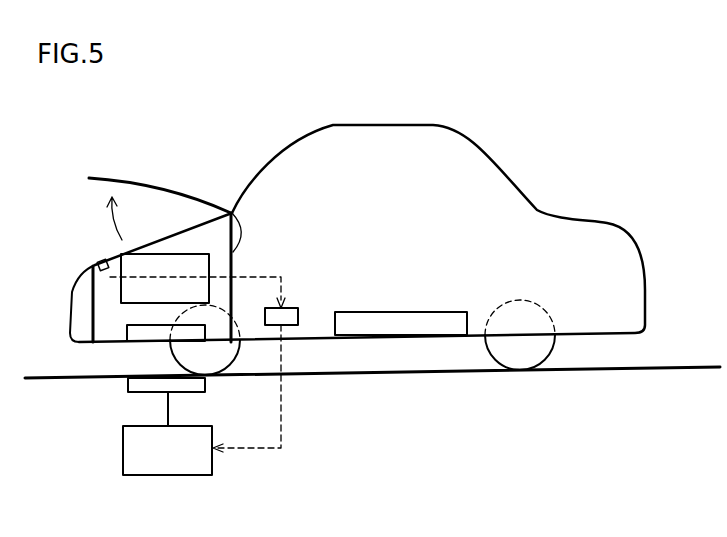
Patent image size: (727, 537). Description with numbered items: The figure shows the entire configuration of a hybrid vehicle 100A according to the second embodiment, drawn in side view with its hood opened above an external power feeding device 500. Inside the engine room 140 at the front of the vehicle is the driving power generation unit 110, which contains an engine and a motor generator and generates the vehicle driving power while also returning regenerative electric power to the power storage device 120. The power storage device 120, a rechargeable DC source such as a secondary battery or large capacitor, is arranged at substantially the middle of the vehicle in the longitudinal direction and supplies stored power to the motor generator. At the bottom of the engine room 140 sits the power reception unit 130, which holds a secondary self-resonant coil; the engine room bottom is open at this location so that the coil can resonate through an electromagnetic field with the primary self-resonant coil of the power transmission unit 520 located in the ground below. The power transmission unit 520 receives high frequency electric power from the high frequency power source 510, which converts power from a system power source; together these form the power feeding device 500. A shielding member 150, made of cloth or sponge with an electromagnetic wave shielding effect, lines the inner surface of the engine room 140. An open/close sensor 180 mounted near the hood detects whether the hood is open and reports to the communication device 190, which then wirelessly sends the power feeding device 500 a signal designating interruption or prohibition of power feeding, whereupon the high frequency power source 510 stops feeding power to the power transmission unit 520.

The hybrid vehicle 100A is at (363, 125).
The driving power generation unit 110 is at (163, 254).
The power storage device 120 is at (403, 312).
The power reception unit 130 is at (136, 325).
The engine room 140 is at (105, 293).
The shielding member 150 is at (232, 212).
The open/close sensor 180 is at (98, 262).
The communication device 190 is at (290, 325).
The power feeding device 500 is at (160, 449).
The high frequency power source 510 is at (167, 473).
The power transmission unit 520 is at (207, 382).